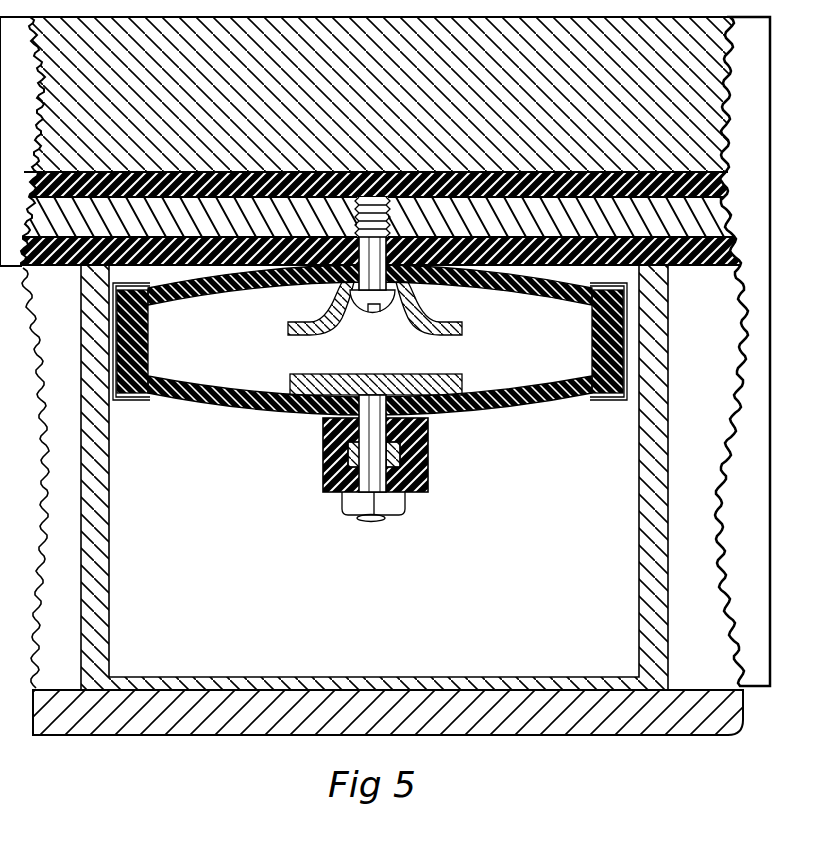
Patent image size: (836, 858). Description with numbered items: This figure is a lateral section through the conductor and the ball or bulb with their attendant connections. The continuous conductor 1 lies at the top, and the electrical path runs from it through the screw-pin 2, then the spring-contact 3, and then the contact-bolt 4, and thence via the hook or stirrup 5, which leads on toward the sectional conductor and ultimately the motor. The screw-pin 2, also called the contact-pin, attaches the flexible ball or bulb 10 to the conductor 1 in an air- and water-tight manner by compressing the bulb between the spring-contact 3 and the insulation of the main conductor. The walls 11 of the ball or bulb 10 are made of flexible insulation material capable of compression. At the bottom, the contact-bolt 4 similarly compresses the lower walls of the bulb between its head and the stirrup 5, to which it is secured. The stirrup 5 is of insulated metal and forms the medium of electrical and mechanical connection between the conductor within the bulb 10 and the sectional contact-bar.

The continuous conductor 1 is at (697, 232).
The screw-pin 2 is at (387, 303).
The spring-contact 3 is at (425, 325).
The contact-bolt 4 is at (463, 374).
The hook or stirrup 5 is at (427, 450).
The flexible ball or bulb 10 is at (227, 288).
The walls of the ball or bulb 11 is at (515, 392).